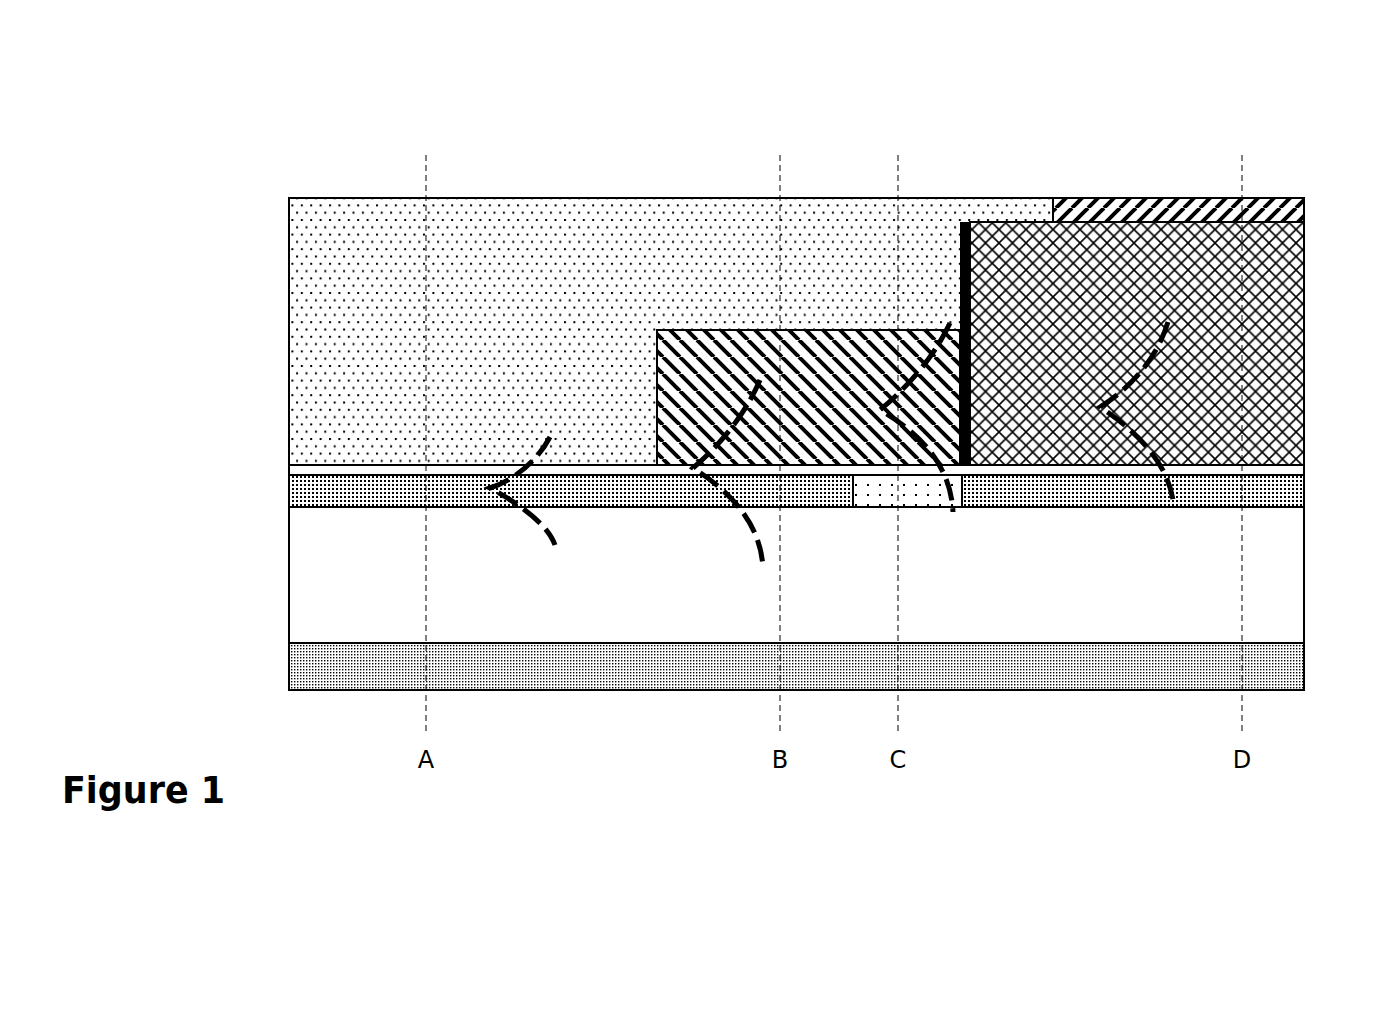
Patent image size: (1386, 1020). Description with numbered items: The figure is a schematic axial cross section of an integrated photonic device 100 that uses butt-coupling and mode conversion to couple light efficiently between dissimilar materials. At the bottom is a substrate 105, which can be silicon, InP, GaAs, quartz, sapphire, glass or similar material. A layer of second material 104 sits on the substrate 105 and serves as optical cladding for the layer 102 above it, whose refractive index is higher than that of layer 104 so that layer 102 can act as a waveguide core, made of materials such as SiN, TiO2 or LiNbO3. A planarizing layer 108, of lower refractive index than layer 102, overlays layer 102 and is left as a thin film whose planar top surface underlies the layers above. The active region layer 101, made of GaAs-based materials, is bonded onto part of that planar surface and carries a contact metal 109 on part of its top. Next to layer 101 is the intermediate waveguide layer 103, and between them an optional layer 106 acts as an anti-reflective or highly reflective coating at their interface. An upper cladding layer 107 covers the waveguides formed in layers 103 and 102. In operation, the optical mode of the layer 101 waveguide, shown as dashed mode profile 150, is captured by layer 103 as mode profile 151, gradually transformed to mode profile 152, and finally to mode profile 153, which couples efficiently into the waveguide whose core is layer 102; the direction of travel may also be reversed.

The integrated photonic device 100 is at (148, 160).
The active region layer 101 is at (1304, 345).
The waveguide core layer 102 is at (290, 493).
The intermediate waveguide layer 103 is at (845, 330).
The second material layer 104 is at (290, 583).
The substrate 105 is at (290, 668).
The optional coating layer 106 is at (963, 220).
The upper cladding layer 107 is at (303, 358).
The planarization layer 108 is at (350, 468).
The contact metal 109 is at (1212, 197).
The mode profile 150 is at (1173, 500).
The mode profile 151 is at (955, 512).
The mode profile 152 is at (763, 568).
The mode profile 153 is at (555, 545).